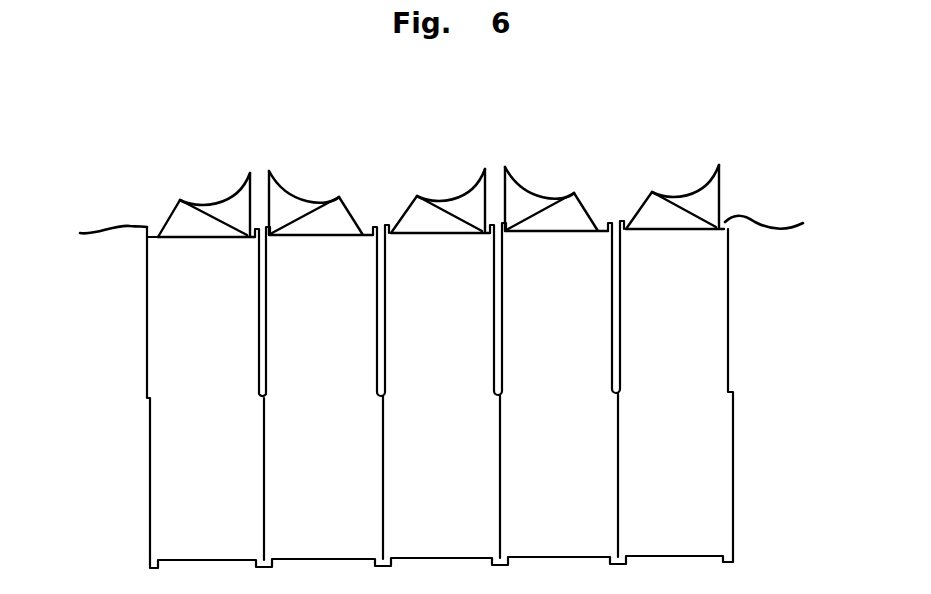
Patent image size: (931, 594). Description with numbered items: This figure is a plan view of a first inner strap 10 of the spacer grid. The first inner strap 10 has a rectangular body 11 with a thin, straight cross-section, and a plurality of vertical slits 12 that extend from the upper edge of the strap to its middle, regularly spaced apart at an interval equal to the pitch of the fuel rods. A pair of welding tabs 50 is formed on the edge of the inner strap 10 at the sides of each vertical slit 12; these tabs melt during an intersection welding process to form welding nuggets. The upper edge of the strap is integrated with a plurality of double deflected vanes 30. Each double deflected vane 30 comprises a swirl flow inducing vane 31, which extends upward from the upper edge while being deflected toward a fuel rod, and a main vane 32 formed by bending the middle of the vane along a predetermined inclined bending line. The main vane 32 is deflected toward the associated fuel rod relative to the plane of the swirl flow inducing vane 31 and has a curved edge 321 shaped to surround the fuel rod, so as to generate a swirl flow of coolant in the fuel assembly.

The first inner strap 10 is at (748, 203).
The rectangular body 11 is at (172, 486).
The vertical slit 12 is at (260, 315).
The double deflected vane 30 is at (450, 188).
The swirl flow inducing vane 31 is at (193, 208).
The main vane 32 is at (702, 200).
The curved edge 321 is at (228, 203).
The welding tab 50 is at (437, 223).